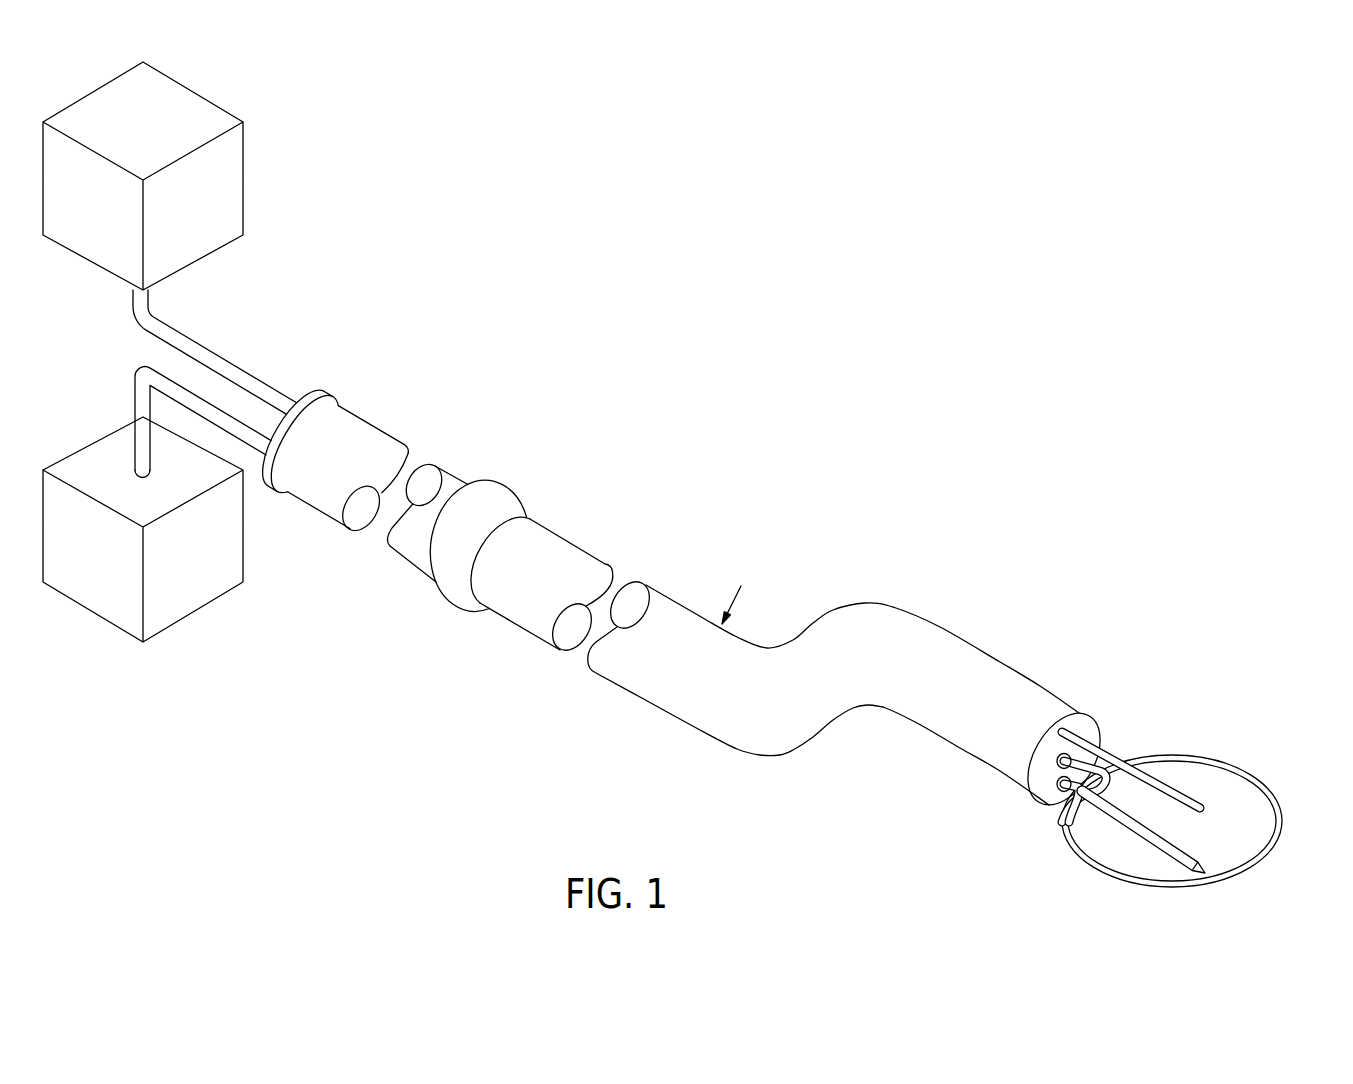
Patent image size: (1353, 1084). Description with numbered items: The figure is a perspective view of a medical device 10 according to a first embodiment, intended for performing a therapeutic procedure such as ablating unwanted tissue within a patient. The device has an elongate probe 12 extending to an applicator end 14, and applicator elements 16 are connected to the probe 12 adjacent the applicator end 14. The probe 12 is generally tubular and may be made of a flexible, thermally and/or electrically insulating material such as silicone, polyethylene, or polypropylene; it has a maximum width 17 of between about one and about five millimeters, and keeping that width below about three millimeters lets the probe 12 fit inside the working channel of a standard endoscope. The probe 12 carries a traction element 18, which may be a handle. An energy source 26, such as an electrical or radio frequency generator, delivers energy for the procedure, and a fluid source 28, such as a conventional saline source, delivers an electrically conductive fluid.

The medical device 10 is at (546, 220).
The elongate probe 12 is at (1007, 733).
The applicator end 14 is at (1010, 763).
The applicator elements 16 is at (1153, 712).
The maximum width 17 is at (666, 727).
The traction element 18 is at (452, 587).
The energy source 26 is at (103, 221).
The fluid source 28 is at (108, 572).